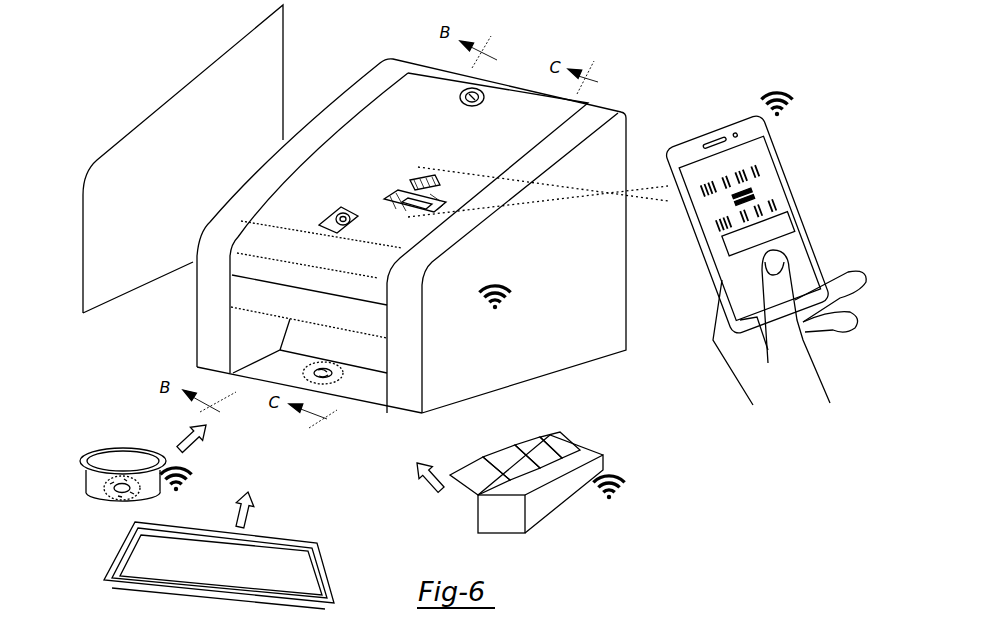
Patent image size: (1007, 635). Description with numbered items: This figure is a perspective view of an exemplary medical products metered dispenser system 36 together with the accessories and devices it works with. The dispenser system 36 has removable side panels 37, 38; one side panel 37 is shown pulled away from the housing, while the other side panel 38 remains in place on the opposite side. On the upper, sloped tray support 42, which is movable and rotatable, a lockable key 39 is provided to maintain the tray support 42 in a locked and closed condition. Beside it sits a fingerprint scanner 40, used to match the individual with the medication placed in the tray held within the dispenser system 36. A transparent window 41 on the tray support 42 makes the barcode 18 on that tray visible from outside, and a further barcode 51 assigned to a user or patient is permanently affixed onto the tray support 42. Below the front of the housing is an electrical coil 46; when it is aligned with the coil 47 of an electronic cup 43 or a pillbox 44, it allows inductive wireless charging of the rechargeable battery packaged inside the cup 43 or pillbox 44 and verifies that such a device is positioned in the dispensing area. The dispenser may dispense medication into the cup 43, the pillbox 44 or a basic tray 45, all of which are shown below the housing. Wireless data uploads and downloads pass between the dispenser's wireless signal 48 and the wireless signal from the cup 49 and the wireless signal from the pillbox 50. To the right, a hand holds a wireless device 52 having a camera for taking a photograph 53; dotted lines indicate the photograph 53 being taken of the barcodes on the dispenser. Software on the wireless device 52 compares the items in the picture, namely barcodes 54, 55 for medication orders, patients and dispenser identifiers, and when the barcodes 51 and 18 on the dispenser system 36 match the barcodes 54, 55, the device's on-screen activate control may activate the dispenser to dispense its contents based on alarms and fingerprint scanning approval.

The barcode 18 is at (392, 198).
The medical products metered dispenser system 36 is at (379, 66).
The removable side panel 37 is at (183, 159).
The removable side panel 38 is at (524, 263).
The lockable key 39 is at (490, 86).
The fingerprint scanner 40 is at (335, 208).
The transparent window 41 is at (400, 191).
The tray support 42 is at (414, 243).
The cup 43 is at (121, 452).
The pillbox 44 is at (566, 496).
The basic tray 45 is at (258, 568).
The electrical coil 46 is at (343, 380).
The coil 47 is at (96, 490).
The wireless signal 48 is at (510, 297).
The wireless signal from the cup 49 is at (184, 481).
The wireless signal from the pillbox 50 is at (622, 488).
The barcode 51 is at (420, 176).
The wireless device 52 is at (746, 283).
The photograph 53 is at (538, 192).
The barcode 54 is at (767, 165).
The barcode 55 is at (793, 208).